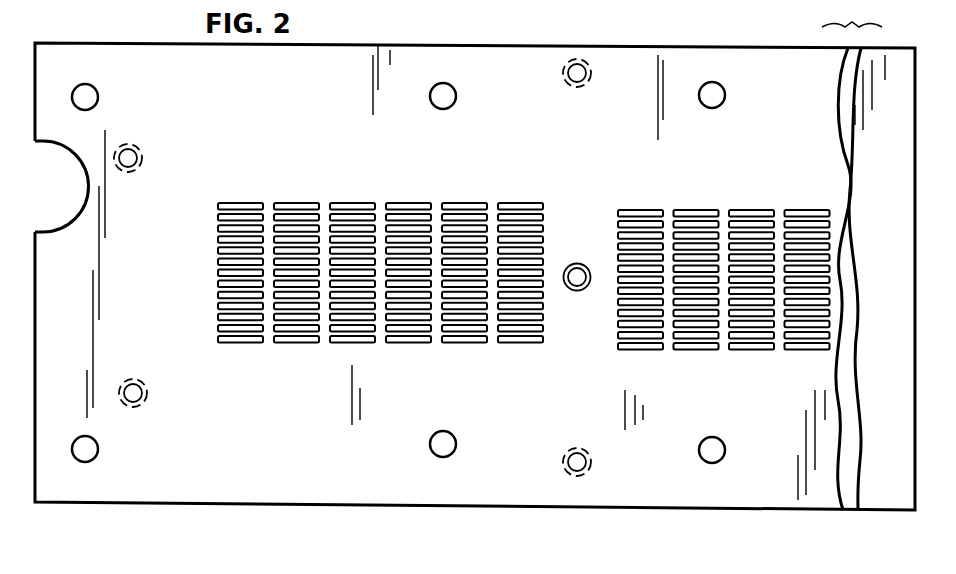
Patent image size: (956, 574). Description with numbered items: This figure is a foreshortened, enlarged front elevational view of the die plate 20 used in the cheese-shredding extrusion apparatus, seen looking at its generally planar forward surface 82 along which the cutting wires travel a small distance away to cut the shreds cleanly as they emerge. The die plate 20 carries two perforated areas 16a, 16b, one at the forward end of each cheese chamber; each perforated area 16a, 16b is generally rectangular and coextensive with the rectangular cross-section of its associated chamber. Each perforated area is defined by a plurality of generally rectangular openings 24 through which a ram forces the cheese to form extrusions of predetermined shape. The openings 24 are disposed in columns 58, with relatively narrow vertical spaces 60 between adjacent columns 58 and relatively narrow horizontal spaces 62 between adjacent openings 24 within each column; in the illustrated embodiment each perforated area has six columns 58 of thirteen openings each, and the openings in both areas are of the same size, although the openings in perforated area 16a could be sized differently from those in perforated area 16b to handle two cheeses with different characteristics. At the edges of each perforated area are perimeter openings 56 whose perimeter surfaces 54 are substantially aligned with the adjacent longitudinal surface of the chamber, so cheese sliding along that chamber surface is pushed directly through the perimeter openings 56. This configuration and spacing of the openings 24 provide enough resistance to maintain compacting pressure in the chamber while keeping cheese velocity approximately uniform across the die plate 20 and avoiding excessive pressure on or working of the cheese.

The die plate 20 is at (247, 89).
The forward surface 82 is at (140, 75).
The perforated area 16a is at (537, 238).
The perforated area 16b is at (798, 120).
The openings 24 is at (240, 203).
The perimeter surfaces 54 is at (298, 203).
The perimeter openings 56 is at (280, 203).
The columns 58 is at (297, 176).
The vertical spaces 60 is at (436, 190).
The horizontal spaces 62 is at (522, 203).